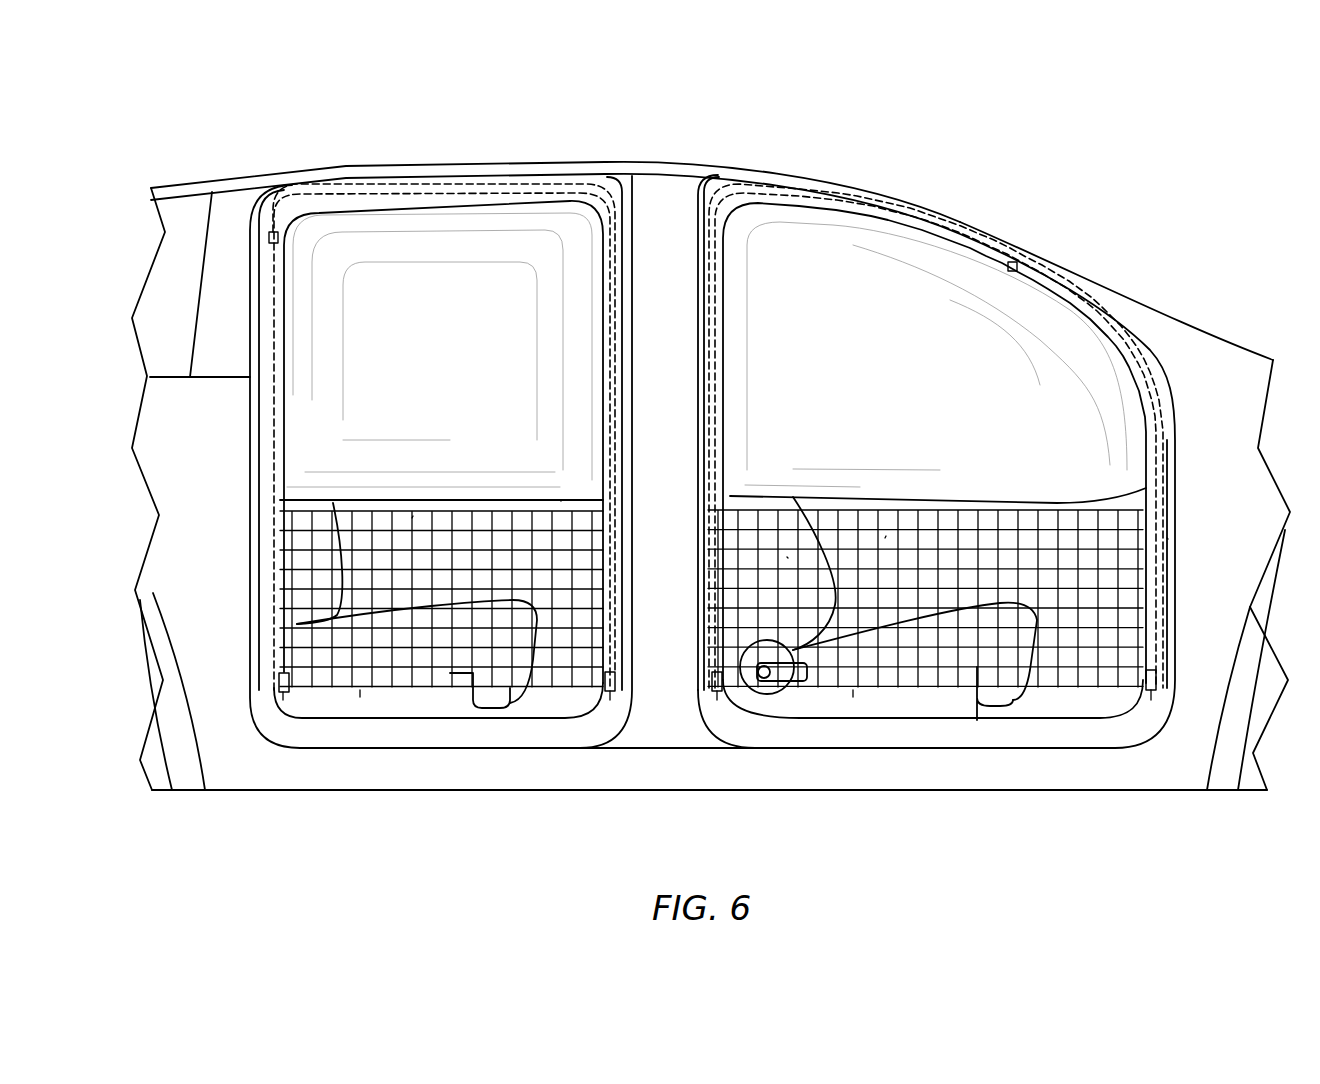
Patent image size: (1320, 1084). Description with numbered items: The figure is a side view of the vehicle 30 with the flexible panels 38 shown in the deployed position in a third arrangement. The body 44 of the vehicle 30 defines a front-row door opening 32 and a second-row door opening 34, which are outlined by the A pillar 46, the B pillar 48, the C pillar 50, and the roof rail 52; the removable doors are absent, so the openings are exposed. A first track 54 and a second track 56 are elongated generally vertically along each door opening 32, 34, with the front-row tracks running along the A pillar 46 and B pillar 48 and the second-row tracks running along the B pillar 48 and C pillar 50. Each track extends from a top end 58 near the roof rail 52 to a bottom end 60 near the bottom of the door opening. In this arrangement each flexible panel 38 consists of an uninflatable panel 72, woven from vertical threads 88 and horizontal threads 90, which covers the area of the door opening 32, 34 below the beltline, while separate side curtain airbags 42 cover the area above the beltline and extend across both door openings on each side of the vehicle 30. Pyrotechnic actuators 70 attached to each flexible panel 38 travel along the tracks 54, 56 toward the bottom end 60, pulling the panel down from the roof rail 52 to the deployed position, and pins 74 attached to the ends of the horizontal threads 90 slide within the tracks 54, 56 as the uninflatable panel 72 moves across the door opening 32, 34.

The vehicle 30 is at (1139, 135).
The front-row door opening 32 is at (922, 748).
The second-row door opening 34 is at (452, 748).
The flexible panel 38 is at (360, 688).
The side curtain airbag 42 is at (363, 503).
The body 44 is at (1191, 793).
The A pillar 46 is at (1100, 282).
The B pillar 48 is at (648, 173).
The C pillar 50 is at (200, 243).
The roof rail 52 is at (521, 161).
The first track 54 is at (620, 274).
The second track 56 is at (268, 248).
The top end 58 is at (277, 232).
The bottom end 60 is at (283, 695).
The pyrotechnic actuator 70 is at (279, 683).
The uninflatable panel 72 is at (531, 690).
The pin 74 is at (1163, 615).
The vertical threads 88 is at (467, 523).
The horizontal threads 90 is at (575, 565).